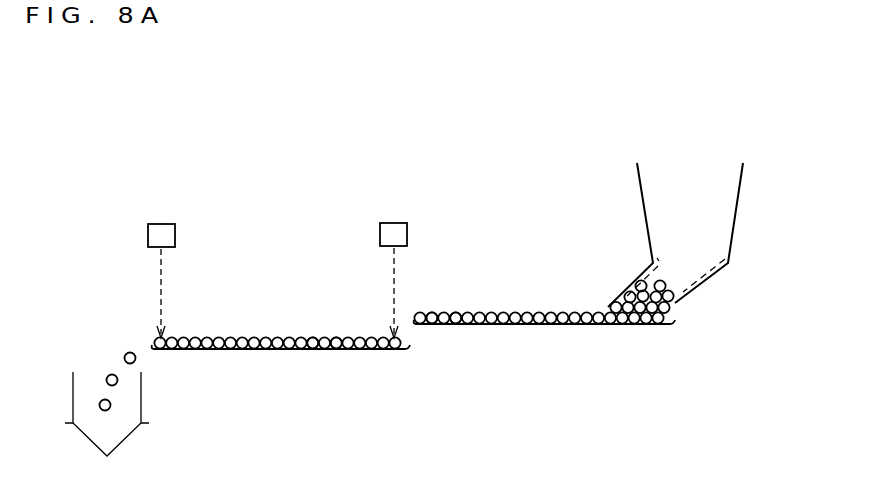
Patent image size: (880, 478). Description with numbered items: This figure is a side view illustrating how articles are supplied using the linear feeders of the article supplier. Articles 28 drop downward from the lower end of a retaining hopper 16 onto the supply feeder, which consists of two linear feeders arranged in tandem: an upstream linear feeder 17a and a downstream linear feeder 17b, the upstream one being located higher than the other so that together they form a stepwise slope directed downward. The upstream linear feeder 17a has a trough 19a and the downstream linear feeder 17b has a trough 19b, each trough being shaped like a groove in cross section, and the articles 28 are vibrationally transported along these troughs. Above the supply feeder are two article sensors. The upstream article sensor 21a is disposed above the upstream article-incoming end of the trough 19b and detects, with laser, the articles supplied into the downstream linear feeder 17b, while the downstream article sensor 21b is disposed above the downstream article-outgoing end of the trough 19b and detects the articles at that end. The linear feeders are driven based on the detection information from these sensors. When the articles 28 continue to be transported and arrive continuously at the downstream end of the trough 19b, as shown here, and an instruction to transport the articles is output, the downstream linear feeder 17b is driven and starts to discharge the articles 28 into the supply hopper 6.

The supply hopper 6 is at (73, 383).
The retaining hopper 16 is at (640, 190).
The upstream linear feeder 17a is at (549, 298).
The downstream linear feeder 17b is at (272, 323).
The trough 19a is at (532, 326).
The trough 19b is at (266, 350).
The upstream article sensor 21a is at (394, 223).
The downstream article sensor 21b is at (162, 224).
The articles 28 is at (314, 337).